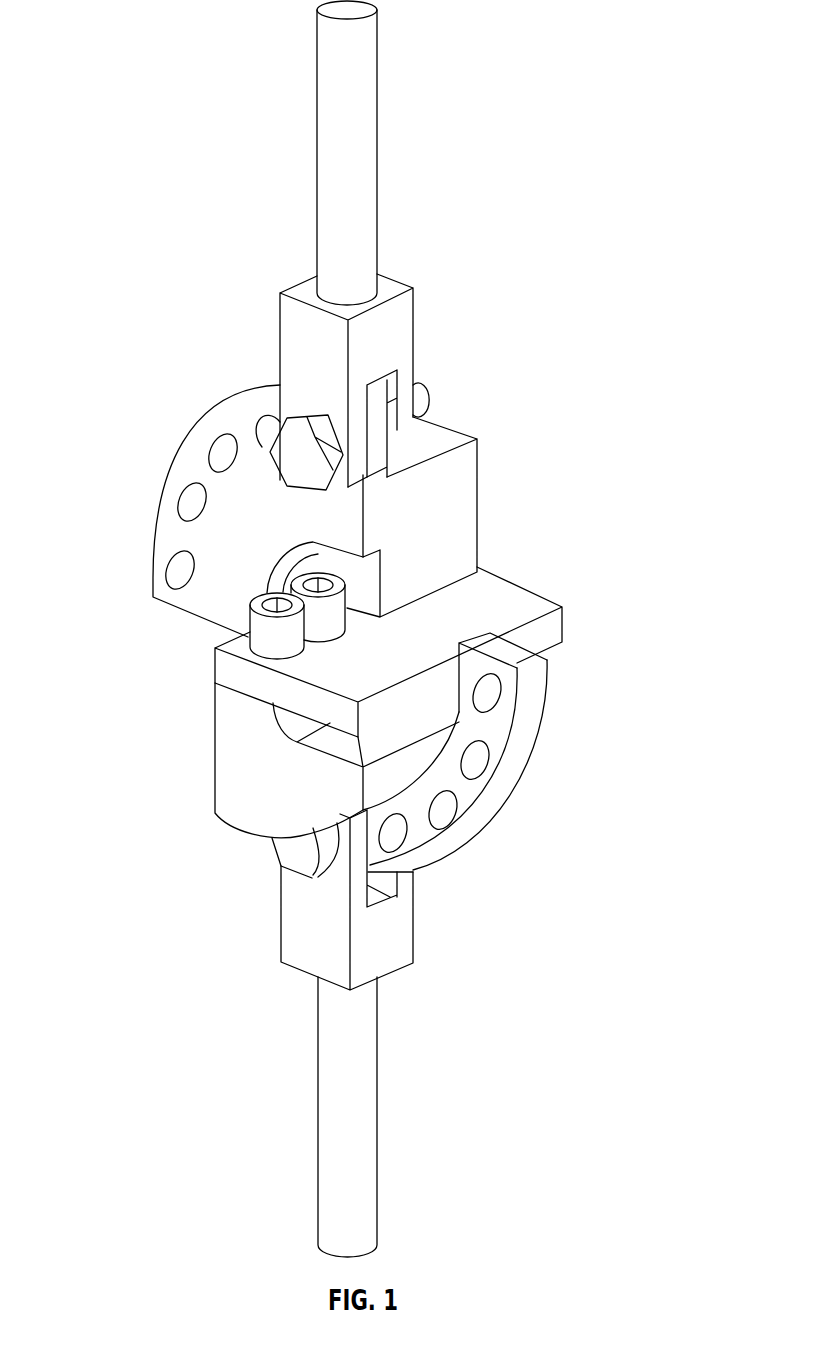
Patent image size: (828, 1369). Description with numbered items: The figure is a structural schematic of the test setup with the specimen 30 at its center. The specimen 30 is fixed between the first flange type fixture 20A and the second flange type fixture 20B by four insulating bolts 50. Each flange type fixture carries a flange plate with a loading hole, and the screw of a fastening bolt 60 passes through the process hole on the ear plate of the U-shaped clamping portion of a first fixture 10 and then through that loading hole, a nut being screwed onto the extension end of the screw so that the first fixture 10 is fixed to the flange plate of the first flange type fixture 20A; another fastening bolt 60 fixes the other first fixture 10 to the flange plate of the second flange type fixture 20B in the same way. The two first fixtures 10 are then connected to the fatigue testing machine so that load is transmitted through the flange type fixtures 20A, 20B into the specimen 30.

The first fixture 10 is at (377, 173).
The first flange type fixture 20A is at (480, 505).
The second flange type fixture 20B is at (535, 753).
The specimen 30 is at (500, 603).
The insulating bolts 50 is at (275, 634).
The fastening bolt 60 is at (292, 458).